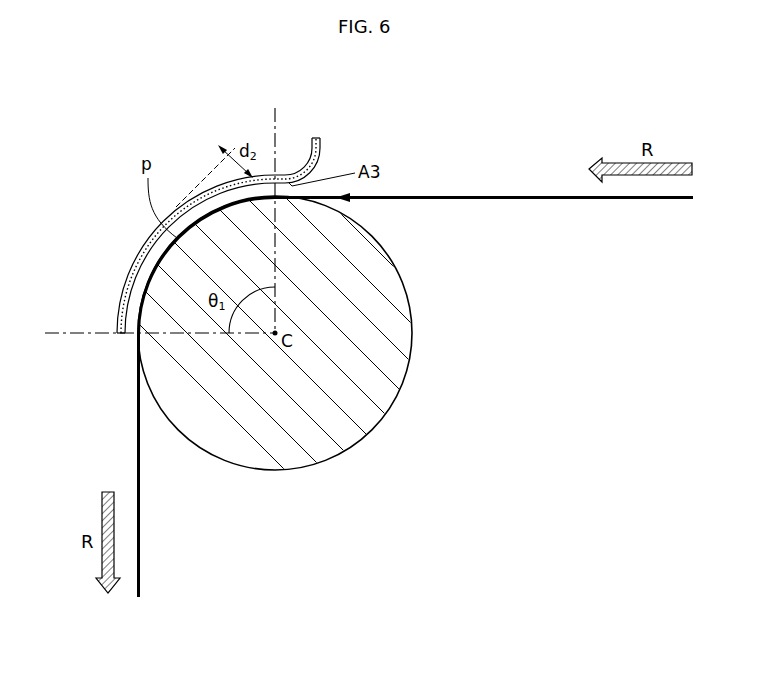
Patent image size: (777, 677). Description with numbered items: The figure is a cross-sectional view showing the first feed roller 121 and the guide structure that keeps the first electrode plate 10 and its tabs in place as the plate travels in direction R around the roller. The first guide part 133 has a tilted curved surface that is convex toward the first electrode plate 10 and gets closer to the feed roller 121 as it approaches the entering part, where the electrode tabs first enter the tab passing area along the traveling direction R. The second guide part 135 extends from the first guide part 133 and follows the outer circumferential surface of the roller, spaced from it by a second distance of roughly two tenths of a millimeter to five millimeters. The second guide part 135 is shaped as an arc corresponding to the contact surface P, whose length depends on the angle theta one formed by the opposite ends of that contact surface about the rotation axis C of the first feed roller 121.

The first electrode plate 10 is at (468, 194).
The first feed roller 121 is at (393, 340).
The first guide part 133 is at (318, 136).
The second guide part 135 is at (132, 267).